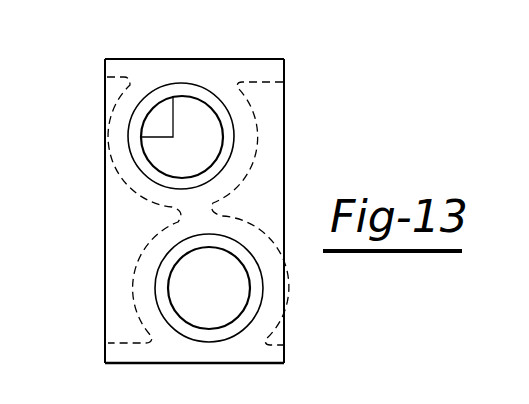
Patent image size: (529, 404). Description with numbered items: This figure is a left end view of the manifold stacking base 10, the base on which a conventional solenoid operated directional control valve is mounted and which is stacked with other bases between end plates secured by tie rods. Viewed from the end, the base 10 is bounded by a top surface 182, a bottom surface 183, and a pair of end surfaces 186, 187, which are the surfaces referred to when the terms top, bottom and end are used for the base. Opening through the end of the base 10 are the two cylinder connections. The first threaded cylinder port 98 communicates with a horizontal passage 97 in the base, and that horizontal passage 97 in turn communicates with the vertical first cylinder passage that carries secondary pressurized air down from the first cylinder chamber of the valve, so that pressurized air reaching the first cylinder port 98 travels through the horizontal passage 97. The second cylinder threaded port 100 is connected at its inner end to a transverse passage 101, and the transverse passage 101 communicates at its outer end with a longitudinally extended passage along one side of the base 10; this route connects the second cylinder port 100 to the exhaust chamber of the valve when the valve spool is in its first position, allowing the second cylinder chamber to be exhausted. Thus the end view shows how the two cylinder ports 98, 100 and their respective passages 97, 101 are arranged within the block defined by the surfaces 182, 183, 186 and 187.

The manifold stacking base 10 is at (104, 316).
The horizontal passage 97 is at (182, 119).
The first threaded cylinder port 98 is at (220, 147).
The second cylinder threaded port 100 is at (249, 292).
The transverse passage 101 is at (172, 270).
The top surface 182 is at (247, 59).
The bottom surface 183 is at (258, 364).
The end surface 186 is at (104, 202).
The end surface 187 is at (285, 170).